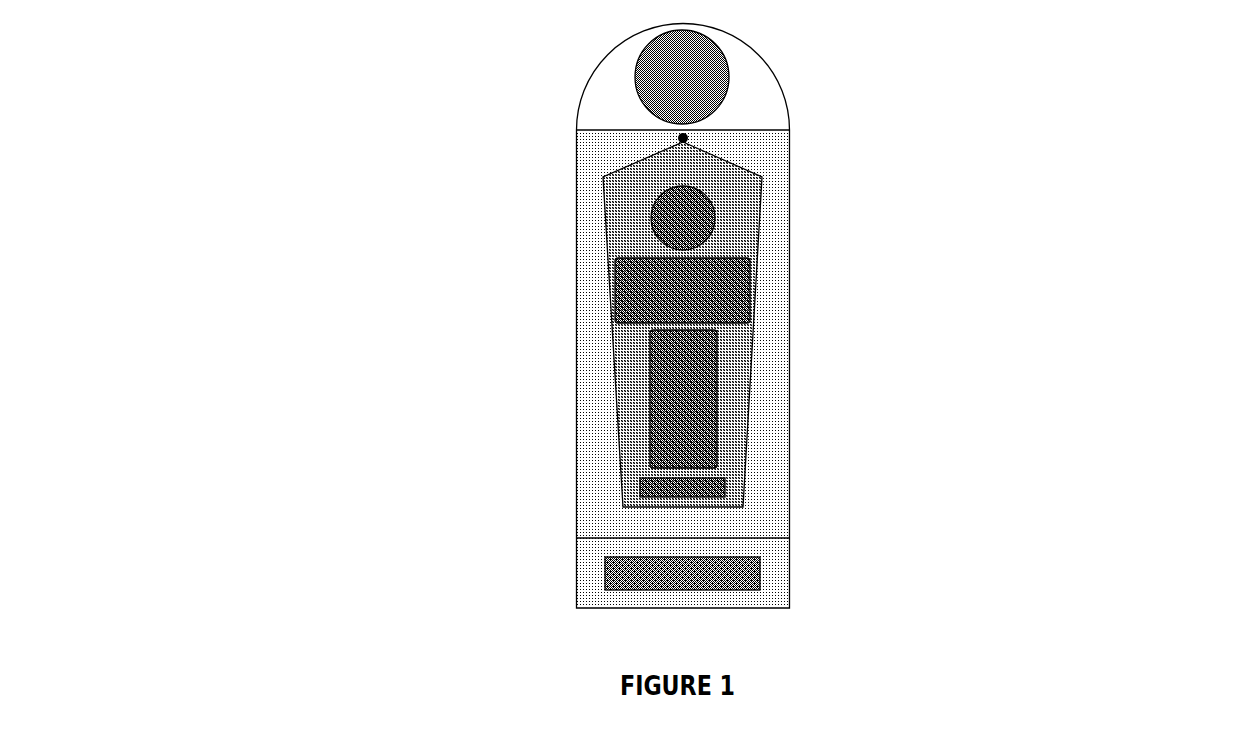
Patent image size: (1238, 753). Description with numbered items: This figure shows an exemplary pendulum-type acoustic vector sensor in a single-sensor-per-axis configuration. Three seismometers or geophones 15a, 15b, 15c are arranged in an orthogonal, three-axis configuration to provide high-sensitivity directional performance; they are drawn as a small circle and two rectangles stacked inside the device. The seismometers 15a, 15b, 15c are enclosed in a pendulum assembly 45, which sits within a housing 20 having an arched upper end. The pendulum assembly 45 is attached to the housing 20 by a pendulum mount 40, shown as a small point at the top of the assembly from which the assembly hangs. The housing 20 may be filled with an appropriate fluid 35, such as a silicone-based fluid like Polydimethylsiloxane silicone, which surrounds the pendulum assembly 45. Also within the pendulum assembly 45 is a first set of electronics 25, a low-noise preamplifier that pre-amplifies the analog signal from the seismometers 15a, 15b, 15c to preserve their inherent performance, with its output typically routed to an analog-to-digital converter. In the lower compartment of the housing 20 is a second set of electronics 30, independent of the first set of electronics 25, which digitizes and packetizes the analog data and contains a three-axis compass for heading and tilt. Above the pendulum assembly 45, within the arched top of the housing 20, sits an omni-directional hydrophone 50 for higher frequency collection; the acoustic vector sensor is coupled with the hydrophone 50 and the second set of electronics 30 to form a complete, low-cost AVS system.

The seismometer 15a is at (693, 213).
The seismometer 15b is at (693, 288).
The seismometer 15c is at (693, 390).
The housing 20 is at (795, 413).
The first set of electronics 25 is at (177, 492).
The second set of electronics 30 is at (138, 574).
The fluid 35 is at (768, 473).
The pendulum mount 40 is at (672, 138).
The pendulum assembly 45 is at (603, 228).
The hydrophone 50 is at (1197, 70).